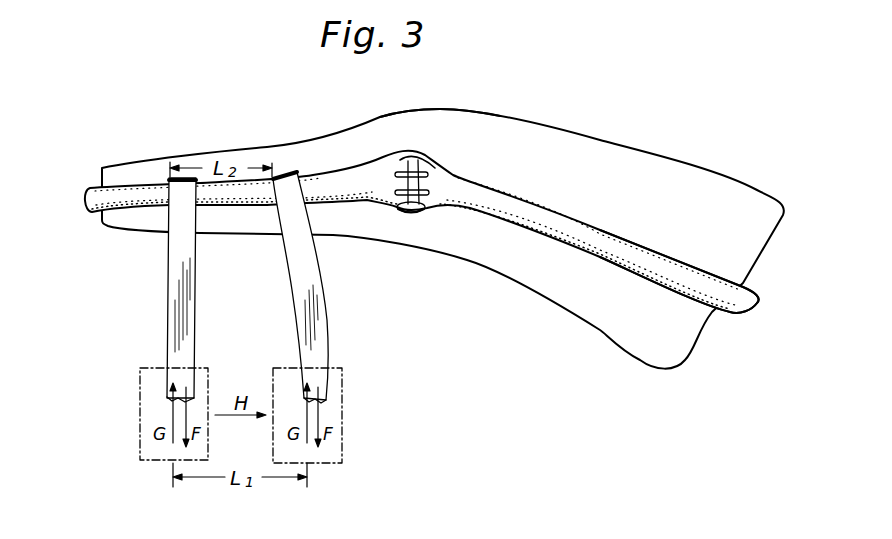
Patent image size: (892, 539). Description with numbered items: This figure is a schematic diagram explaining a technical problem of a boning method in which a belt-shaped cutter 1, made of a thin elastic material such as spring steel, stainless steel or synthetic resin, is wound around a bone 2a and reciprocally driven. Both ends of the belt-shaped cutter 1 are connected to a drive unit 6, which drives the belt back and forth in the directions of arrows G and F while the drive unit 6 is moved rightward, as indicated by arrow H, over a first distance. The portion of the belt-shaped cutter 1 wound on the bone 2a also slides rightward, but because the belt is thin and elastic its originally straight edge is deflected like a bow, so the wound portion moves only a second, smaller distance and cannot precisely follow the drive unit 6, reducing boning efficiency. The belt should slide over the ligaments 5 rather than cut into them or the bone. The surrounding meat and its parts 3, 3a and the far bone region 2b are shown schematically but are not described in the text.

The belt-shaped cutter 1 is at (168, 320).
The bone 2a is at (142, 187).
The other end portion of band 2b is at (643, 247).
The sheet 3 is at (598, 137).
The upper edge portion of sheet 3a is at (436, 115).
The ligaments 5 is at (427, 162).
The drive unit 6 is at (142, 413).